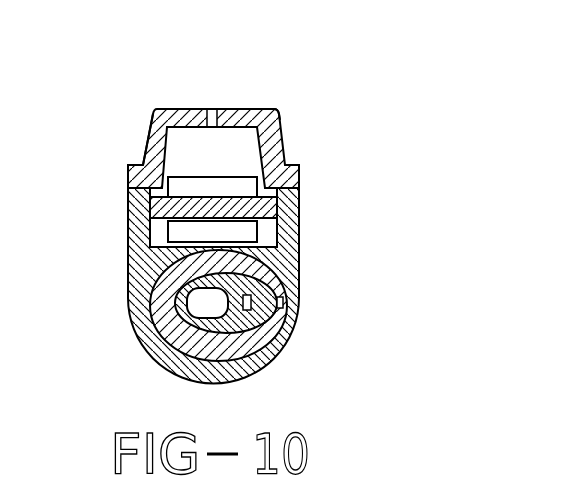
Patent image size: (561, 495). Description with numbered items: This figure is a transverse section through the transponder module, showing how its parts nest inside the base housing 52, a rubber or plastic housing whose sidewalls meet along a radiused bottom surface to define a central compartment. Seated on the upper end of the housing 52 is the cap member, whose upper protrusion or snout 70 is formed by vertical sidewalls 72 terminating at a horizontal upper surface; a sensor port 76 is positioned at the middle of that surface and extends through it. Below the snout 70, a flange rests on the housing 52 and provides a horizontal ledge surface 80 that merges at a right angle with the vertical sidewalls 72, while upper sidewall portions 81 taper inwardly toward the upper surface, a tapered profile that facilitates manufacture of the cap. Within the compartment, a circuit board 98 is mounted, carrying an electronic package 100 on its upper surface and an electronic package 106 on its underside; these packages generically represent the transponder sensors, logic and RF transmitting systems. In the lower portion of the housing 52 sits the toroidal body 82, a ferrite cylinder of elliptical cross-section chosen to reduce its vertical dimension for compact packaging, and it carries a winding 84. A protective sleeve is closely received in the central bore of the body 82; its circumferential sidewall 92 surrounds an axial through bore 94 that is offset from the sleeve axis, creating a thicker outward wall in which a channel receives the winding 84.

The base housing 52 is at (158, 366).
The snout 70 is at (291, 140).
The vertical sidewalls 72 is at (143, 146).
The sensor port 76 is at (213, 116).
The horizontal ledge surface 80 is at (128, 165).
The upper sidewall portions 81 is at (270, 110).
The toroidal body 82 is at (265, 320).
The winding 84 is at (278, 302).
The circumferential sidewall 92 is at (222, 331).
The through bore 94 is at (207, 301).
The circuit board 98 is at (274, 211).
The electronic package 100 is at (207, 183).
The electronic package 106 is at (193, 232).